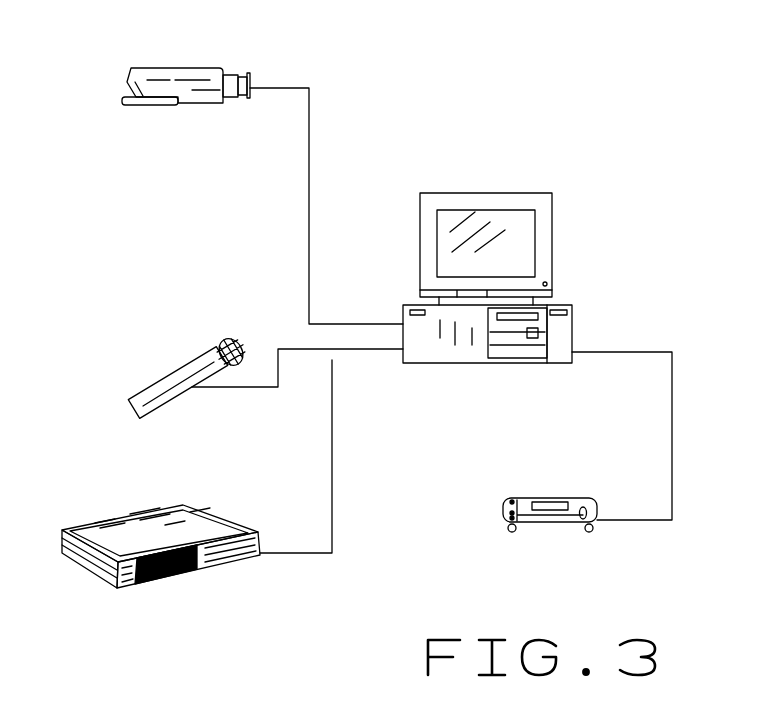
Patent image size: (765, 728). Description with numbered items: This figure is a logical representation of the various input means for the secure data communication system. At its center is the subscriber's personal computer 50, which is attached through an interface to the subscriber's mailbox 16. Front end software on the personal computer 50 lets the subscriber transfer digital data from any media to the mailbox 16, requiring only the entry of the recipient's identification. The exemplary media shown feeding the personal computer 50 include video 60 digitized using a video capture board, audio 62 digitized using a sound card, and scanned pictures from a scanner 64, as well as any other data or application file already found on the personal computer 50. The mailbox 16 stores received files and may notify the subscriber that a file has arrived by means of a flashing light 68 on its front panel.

The video 60 is at (160, 67).
The personal computer 50 is at (560, 305).
The audio 62 is at (130, 403).
The scanner 64 is at (127, 587).
The mailbox 16 is at (544, 511).
The flashing light 68 is at (512, 502).